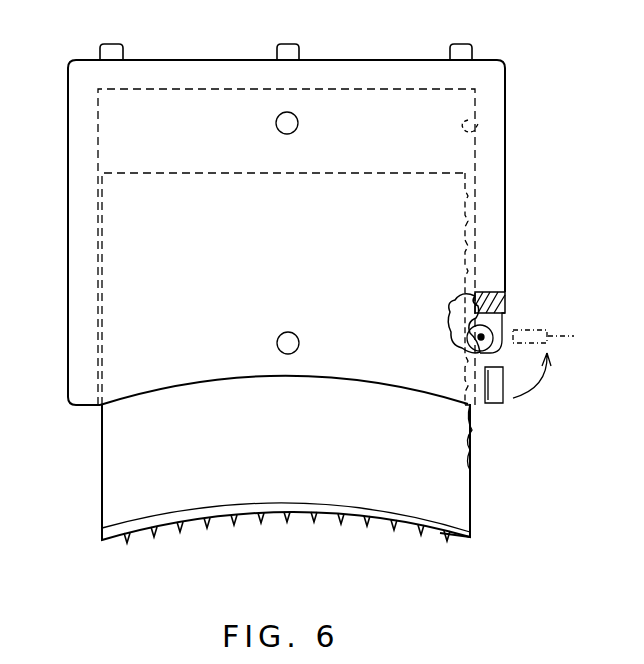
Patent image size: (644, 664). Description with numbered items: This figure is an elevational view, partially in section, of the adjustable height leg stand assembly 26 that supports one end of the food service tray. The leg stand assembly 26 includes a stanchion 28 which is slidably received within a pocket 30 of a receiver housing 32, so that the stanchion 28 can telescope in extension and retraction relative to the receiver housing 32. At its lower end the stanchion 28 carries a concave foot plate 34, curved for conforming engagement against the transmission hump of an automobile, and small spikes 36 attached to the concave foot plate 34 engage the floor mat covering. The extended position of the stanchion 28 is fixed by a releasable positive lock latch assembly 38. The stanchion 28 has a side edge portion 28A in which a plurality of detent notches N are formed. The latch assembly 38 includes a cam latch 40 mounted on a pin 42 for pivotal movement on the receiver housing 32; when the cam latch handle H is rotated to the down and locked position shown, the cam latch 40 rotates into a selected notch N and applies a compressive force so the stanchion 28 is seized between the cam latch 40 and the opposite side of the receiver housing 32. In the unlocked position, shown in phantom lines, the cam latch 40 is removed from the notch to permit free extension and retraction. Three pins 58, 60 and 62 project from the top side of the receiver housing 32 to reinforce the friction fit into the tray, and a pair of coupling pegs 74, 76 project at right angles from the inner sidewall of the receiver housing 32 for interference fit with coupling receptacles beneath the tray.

The leg stand assembly 26 is at (597, 144).
The stanchion 28 is at (120, 482).
The side edge portion 28A is at (470, 500).
The pocket 30 is at (470, 129).
The receiver housing 32 is at (75, 248).
The concave foot plate 34 is at (470, 538).
The spikes 36 is at (365, 522).
The latch assembly 38 is at (525, 324).
The cam latch 40 is at (467, 345).
The pin 42 is at (480, 337).
The pin 58 is at (100, 48).
The pin 60 is at (283, 48).
The pin 62 is at (455, 48).
The coupling peg 74 is at (277, 343).
The coupling peg 76 is at (276, 123).
The cam latch handle H is at (500, 402).
The detent notches N is at (470, 450).